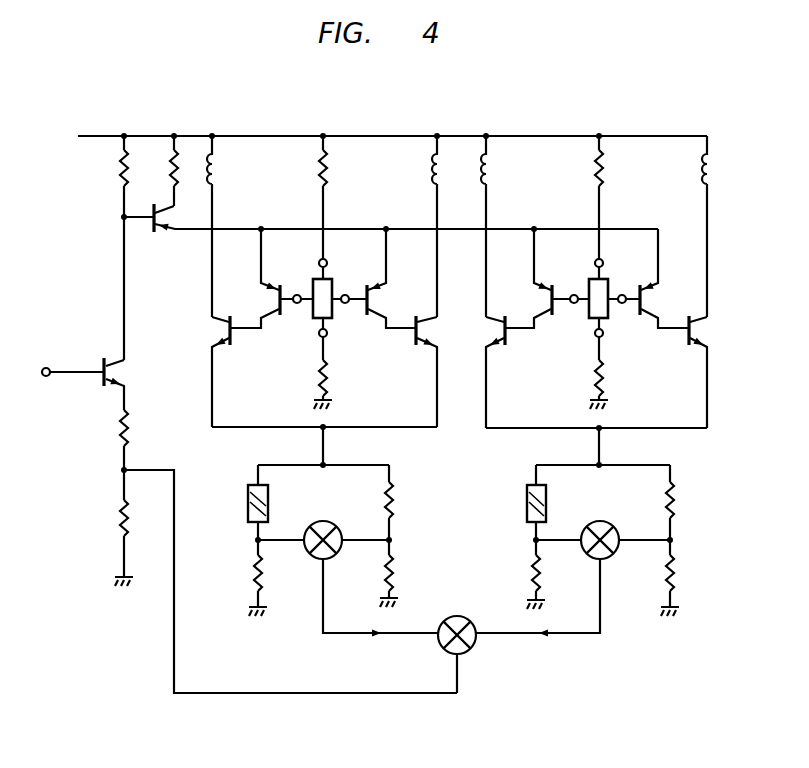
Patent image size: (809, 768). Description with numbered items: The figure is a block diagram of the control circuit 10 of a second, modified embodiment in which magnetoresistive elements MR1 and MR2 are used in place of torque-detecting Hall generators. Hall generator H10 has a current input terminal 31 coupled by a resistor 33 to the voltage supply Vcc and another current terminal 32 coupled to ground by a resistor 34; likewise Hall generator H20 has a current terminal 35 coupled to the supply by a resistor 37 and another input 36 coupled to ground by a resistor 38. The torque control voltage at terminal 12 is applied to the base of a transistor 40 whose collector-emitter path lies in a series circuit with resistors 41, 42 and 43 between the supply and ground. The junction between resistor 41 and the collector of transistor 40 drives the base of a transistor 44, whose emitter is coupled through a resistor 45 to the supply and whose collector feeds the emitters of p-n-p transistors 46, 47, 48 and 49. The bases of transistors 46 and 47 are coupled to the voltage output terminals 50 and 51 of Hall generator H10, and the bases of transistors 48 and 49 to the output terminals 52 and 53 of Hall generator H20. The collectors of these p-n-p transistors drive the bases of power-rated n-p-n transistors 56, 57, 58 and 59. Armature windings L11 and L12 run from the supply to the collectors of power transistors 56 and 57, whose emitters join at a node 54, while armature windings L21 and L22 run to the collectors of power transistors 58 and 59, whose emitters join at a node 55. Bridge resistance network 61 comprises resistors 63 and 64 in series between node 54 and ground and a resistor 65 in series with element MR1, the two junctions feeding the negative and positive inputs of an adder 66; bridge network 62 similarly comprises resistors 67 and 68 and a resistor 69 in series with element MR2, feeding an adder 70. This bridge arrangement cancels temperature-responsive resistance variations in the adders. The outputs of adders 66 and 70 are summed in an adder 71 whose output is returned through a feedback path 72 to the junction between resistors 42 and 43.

The position detecting circuit 10 is at (230, 108).
The terminal 12 is at (50, 356).
The current input terminal 31 is at (326, 260).
The current terminal 32 is at (318, 336).
The resistor 33 is at (330, 172).
The resistor 34 is at (330, 377).
The current terminal 35 is at (603, 260).
The input 36 is at (594, 336).
The resistor 37 is at (604, 172).
The resistor 38 is at (606, 378).
The transistor 40 is at (127, 372).
The resistor 41 is at (119, 175).
The resistor 42 is at (114, 429).
The resistor 43 is at (114, 518).
The transistor 44 is at (163, 234).
The resistor 45 is at (167, 176).
The p-n-p transistor 46 is at (273, 319).
The p-n-p transistor 47 is at (379, 297).
The p-n-p transistor 48 is at (556, 304).
The p-n-p transistor 49 is at (651, 299).
The voltage output terminal 50 is at (298, 294).
The voltage output terminal 51 is at (346, 294).
The voltage output terminal 52 is at (574, 294).
The voltage output terminal 53 is at (623, 294).
The node 54 is at (326, 432).
The node 55 is at (604, 432).
The power-rated n-p-n transistor 56 is at (221, 330).
The power-rated n-p-n transistor 57 is at (416, 343).
The power-rated n-p-n transistor 58 is at (504, 342).
The power-rated n-p-n transistor 59 is at (694, 346).
The bridge resistance network 61 is at (333, 551).
The bridge resistance network 62 is at (604, 551).
The resistor 63 is at (395, 500).
The resistor 64 is at (399, 572).
The resistor 65 is at (253, 566).
The adder 66 is at (318, 558).
The resistor 67 is at (675, 500).
The resistor 68 is at (662, 571).
The resistor 69 is at (526, 571).
The adder 70 is at (596, 558).
The adder 71 is at (471, 654).
The feedback path 72 is at (323, 696).
The armature winding L11 is at (219, 172).
The armature winding L21 is at (430, 172).
The armature winding L12 is at (495, 172).
The armature winding L22 is at (702, 173).
The Hall generator H10 is at (334, 322).
The Hall generator H20 is at (611, 322).
The magnetoresistive element MR1 is at (270, 505).
The magnetoresistive element MR2 is at (548, 505).